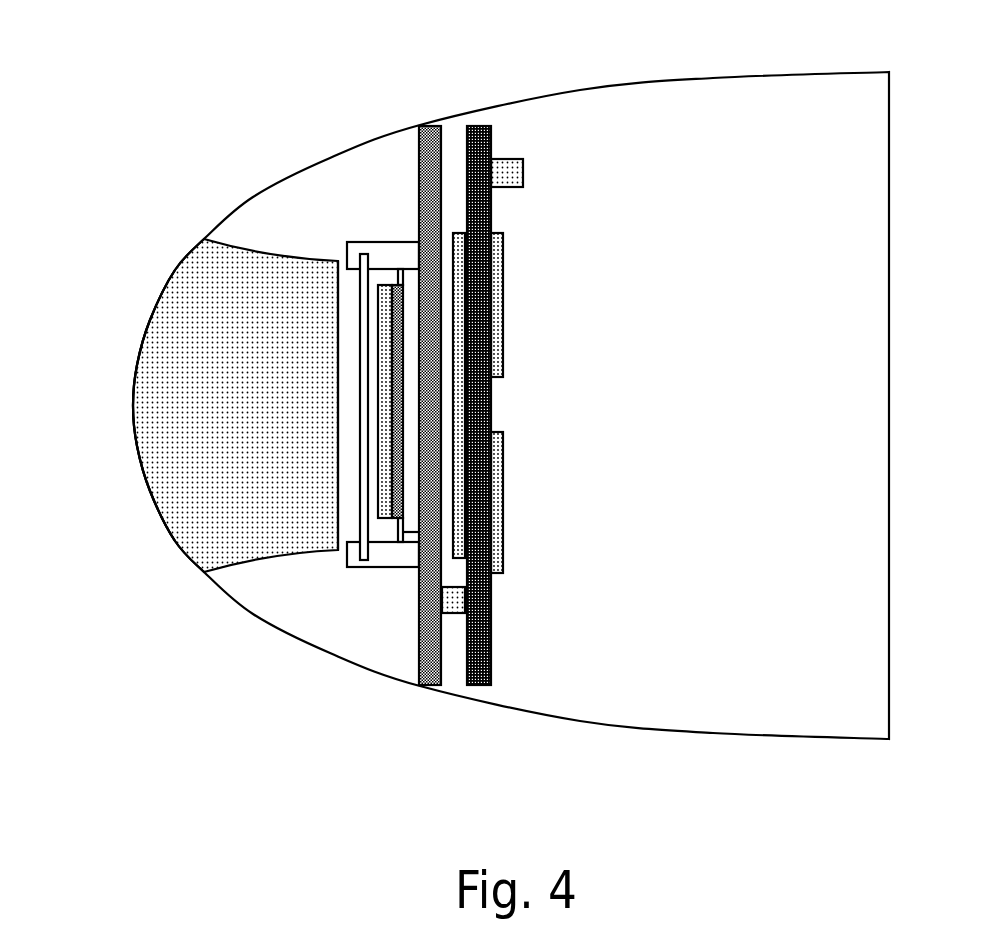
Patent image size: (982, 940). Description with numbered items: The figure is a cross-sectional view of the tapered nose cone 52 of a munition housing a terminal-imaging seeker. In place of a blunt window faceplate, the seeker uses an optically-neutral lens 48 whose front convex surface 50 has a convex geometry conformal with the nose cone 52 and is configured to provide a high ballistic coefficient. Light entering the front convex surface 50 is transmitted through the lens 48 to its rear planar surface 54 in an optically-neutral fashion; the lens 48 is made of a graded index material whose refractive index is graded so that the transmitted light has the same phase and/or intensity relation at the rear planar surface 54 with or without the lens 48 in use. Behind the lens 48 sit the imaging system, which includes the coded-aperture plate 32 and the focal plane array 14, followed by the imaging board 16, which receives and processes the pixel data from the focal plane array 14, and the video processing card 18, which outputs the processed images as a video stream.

The focal plane array 14 is at (405, 406).
The imaging board 16 is at (429, 122).
The video processing card 18 is at (495, 660).
The coded-aperture plate 32 is at (360, 520).
The optically-neutral lens 48 is at (190, 337).
The front convex surface 50 is at (133, 443).
The nose cone 52 is at (255, 197).
The rear planar surface 54 is at (338, 482).